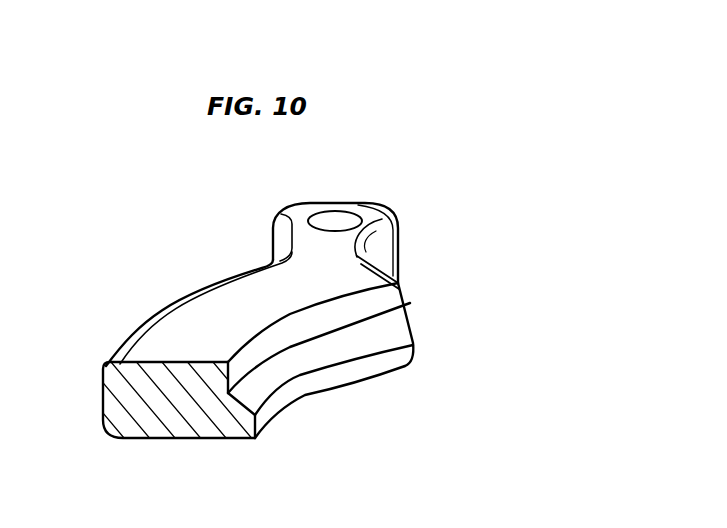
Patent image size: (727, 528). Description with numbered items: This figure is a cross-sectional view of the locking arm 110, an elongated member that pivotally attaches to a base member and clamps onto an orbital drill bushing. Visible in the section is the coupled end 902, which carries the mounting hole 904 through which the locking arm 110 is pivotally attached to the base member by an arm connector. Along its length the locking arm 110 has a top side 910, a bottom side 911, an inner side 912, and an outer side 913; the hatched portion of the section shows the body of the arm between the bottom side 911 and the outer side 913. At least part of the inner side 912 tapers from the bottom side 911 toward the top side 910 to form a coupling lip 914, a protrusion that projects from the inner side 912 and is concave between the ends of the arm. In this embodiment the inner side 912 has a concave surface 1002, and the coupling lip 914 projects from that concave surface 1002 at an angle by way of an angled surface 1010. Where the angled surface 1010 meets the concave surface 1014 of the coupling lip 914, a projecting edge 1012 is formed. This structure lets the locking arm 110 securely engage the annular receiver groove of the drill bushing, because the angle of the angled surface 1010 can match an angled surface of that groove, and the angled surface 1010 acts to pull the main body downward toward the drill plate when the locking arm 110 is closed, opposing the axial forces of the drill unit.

The locking arm 110 is at (479, 165).
The end 902 is at (392, 235).
The mounting hole 904 is at (340, 220).
The top side 910 is at (247, 297).
The bottom side 911 is at (190, 440).
The inner side 912 is at (444, 315).
The outer side 913 is at (128, 339).
The coupling lip 914 is at (257, 437).
The concave surface 1002 is at (386, 302).
The angled surface 1010 is at (337, 347).
The projecting edge 1012 is at (401, 352).
The concave surface of coupling lip 1014 is at (297, 395).